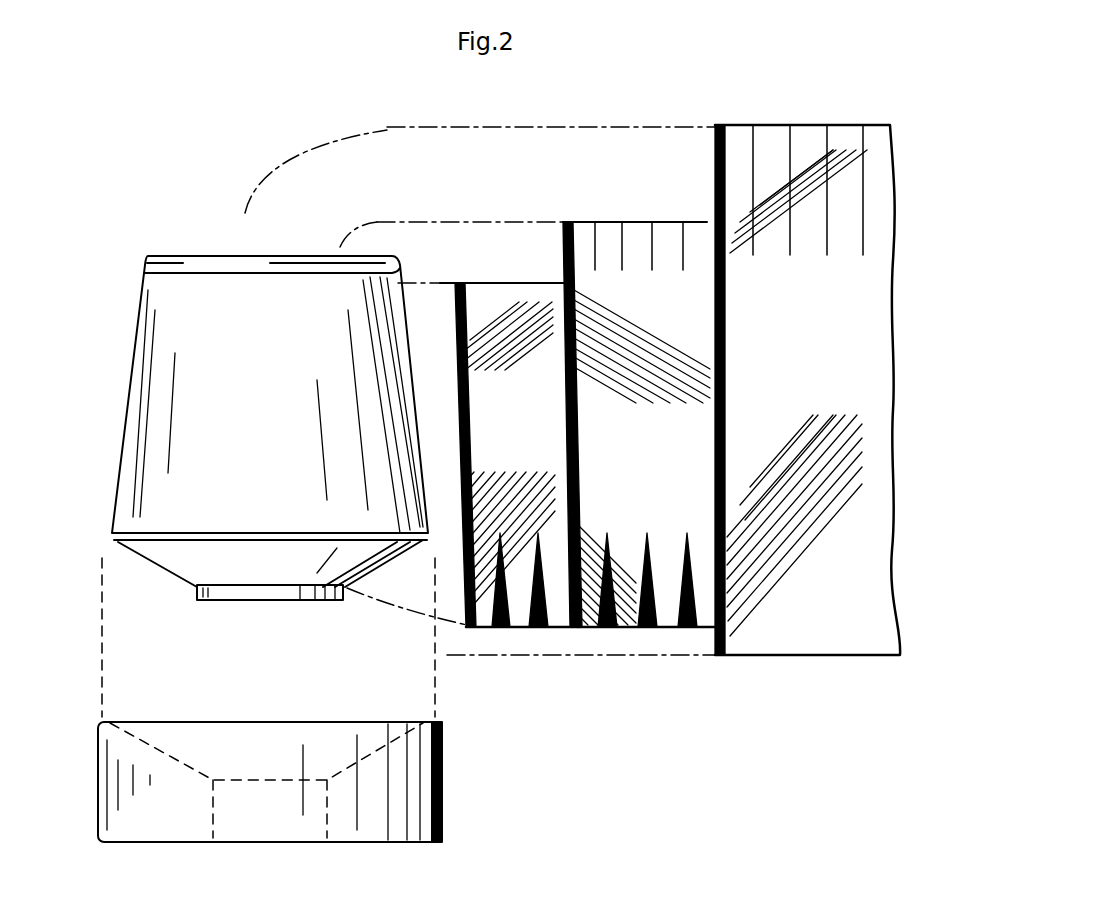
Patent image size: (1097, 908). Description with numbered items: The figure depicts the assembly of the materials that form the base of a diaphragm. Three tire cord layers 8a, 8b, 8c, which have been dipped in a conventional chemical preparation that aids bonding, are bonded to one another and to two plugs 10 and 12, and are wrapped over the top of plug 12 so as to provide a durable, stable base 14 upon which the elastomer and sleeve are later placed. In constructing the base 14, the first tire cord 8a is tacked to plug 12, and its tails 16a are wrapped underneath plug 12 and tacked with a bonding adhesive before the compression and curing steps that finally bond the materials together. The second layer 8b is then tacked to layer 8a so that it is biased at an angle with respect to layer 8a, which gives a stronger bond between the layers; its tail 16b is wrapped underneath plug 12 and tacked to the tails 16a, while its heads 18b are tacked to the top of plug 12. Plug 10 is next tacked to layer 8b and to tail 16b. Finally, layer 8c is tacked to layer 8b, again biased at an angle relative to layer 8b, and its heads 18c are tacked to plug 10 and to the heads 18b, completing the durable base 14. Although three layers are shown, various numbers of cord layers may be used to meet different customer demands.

The tire cord layer 8a is at (537, 454).
The tire cord layer 8b is at (678, 454).
The tire cord layer 8c is at (825, 385).
The plug 10 is at (267, 766).
The plug 12 is at (272, 394).
The base 14 is at (462, 695).
The tails 16a is at (492, 627).
The tail 16b is at (625, 627).
The heads 18b is at (637, 222).
The heads 18c is at (800, 125).